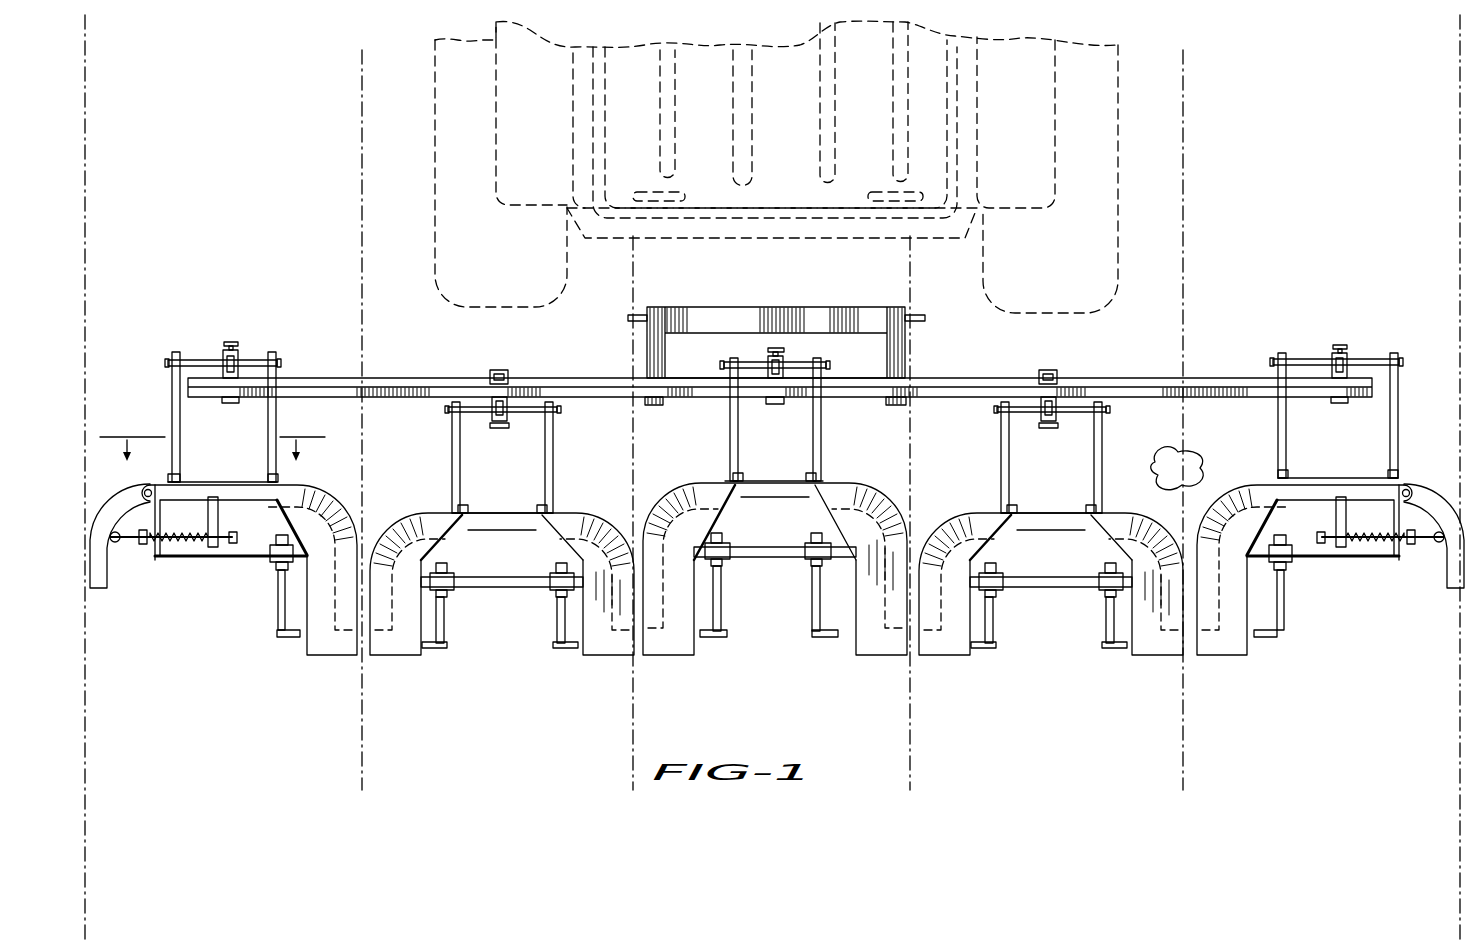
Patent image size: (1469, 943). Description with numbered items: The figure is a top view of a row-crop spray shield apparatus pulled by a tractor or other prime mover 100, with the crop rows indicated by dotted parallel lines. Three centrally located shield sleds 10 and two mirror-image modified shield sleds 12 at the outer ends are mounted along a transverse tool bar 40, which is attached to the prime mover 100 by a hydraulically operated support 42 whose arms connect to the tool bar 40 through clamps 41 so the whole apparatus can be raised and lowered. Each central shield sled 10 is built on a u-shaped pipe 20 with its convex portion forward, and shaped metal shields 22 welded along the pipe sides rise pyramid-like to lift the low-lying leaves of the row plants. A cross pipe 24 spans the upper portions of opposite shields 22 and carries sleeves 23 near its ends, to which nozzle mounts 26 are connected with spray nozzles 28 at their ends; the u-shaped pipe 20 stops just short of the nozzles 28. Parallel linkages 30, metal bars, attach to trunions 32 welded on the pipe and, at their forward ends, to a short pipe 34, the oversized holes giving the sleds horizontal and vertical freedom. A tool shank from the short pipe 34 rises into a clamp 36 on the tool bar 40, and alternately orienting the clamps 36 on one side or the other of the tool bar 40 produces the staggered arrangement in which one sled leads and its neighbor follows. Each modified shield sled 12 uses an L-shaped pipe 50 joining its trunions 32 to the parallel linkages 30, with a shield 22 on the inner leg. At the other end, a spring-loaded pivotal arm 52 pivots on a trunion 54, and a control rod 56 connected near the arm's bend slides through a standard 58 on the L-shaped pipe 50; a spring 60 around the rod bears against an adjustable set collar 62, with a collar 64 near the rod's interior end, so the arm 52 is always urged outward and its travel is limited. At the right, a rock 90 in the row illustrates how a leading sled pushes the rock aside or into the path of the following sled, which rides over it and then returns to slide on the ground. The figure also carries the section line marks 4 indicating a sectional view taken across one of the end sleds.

The prime mover 100 is at (343, 133).
The shield sled 10 is at (578, 495).
The modified shield sled 12 is at (337, 481).
The u-shaped pipe 20 is at (512, 530).
The shaped metal shield 22 is at (332, 655).
The sleeve 23 is at (272, 562).
The cross pipe 24 is at (492, 577).
The nozzle mount 26 is at (278, 620).
The spray nozzle 28 is at (290, 640).
The parallel linkage 30 is at (268, 425).
The trunion 32 is at (268, 478).
The short pipe 34 is at (198, 361).
The clamp 36 is at (236, 344).
The tool bar 40 is at (412, 378).
The clamp 41 is at (660, 405).
The hydraulically operated support 42 is at (733, 318).
The L-shaped pipe 50 is at (228, 500).
The spring-loaded pivotal arm 52 is at (127, 503).
The trunion 54 is at (150, 486).
The control rod 56 is at (118, 542).
The standard 58 is at (208, 548).
The spring 60 is at (170, 535).
The adjustable set collar 62 is at (143, 548).
The collar 64 is at (233, 545).
The rock 90 is at (1160, 460).
The section line 4- 4 is at (212, 433).